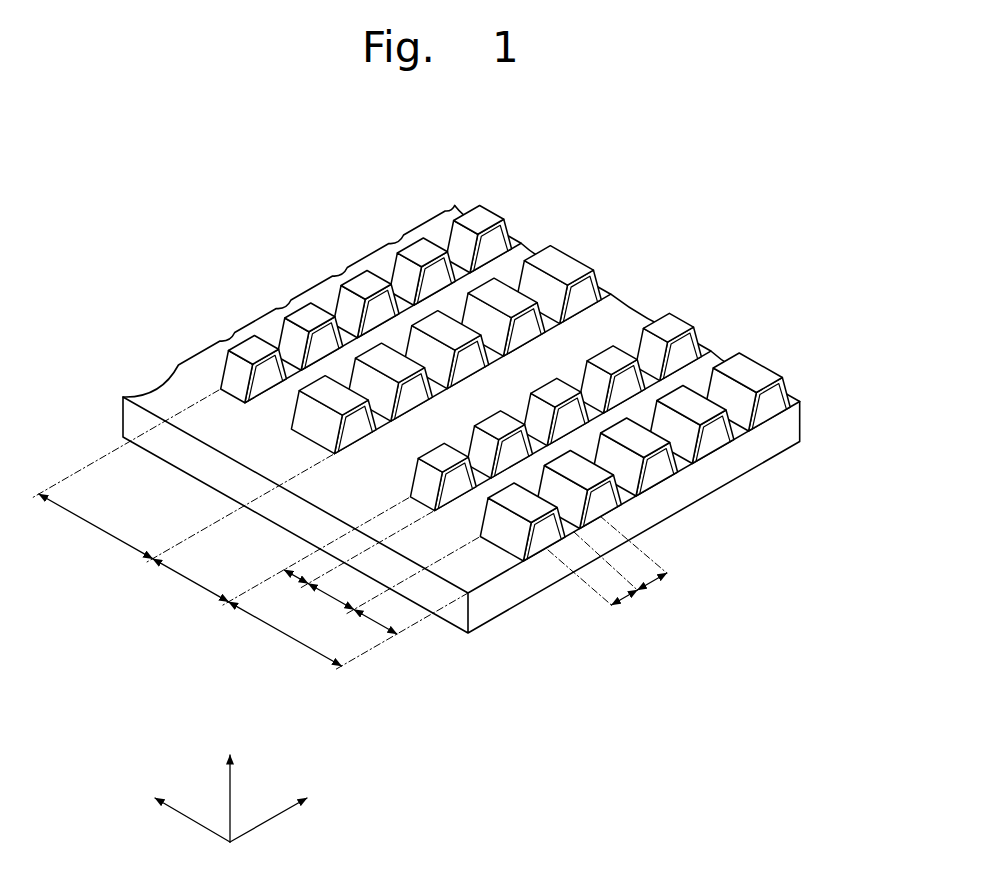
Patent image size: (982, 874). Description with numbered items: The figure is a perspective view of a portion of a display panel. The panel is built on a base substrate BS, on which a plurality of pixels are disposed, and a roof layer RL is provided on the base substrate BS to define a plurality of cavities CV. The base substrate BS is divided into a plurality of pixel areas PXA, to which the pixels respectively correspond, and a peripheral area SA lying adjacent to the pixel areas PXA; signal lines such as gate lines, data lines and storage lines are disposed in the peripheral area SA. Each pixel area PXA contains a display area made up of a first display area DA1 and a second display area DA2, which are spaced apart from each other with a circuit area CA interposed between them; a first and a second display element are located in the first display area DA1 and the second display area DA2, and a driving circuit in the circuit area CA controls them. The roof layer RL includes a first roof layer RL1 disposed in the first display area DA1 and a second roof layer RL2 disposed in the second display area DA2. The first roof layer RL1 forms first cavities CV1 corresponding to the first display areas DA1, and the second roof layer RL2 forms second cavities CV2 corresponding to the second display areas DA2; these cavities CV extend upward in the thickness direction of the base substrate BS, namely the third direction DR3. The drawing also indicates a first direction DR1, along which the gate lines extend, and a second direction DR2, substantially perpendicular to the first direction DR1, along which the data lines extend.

The base substrate BS is at (805, 421).
The roof layer RL is at (509, 383).
The first roof layer RL1 is at (667, 324).
The second roof layer RL2 is at (710, 353).
The cavities CV is at (538, 394).
The first cavities CV1 is at (622, 380).
The second cavities CV2 is at (658, 473).
The pixel areas PXA is at (349, 530).
The peripheral area SA is at (420, 583).
The first display area DA1 is at (282, 587).
The circuit area CA is at (330, 602).
The second display area DA2 is at (368, 629).
The first direction DR1 is at (175, 805).
The second direction DR2 is at (286, 805).
The third direction DR3 is at (230, 785).